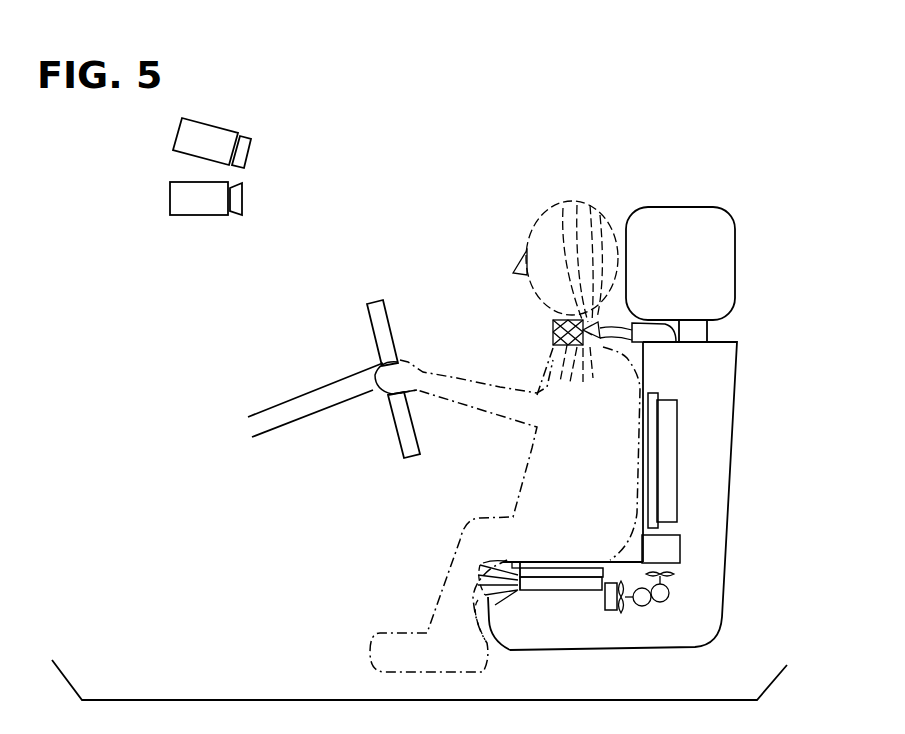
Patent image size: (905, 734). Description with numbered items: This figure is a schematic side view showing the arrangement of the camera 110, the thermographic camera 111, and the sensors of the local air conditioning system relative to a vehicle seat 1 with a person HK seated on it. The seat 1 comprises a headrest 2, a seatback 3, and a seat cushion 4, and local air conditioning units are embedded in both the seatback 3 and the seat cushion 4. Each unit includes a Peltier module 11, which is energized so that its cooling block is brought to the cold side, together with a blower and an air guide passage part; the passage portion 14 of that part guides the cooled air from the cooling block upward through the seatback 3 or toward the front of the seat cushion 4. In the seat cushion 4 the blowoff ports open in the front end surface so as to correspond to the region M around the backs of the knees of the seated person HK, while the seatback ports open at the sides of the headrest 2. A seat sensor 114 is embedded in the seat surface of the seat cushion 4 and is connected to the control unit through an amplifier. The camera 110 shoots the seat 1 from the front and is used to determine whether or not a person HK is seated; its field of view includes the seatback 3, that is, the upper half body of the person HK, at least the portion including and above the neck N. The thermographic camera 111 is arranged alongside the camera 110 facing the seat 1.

The seat 1 is at (651, 453).
The headrest 2 is at (708, 270).
The seatback 3 is at (713, 377).
The seat cushion 4 is at (538, 623).
The Peltier module 11 is at (690, 468).
The back passage portion 14 is at (552, 363).
The camera 110 is at (175, 132).
The thermographic camera 111 is at (170, 197).
The seat sensor 114 is at (553, 540).
The neck N is at (553, 325).
The person HK is at (510, 470).
The region around the backs of the knees M is at (487, 647).